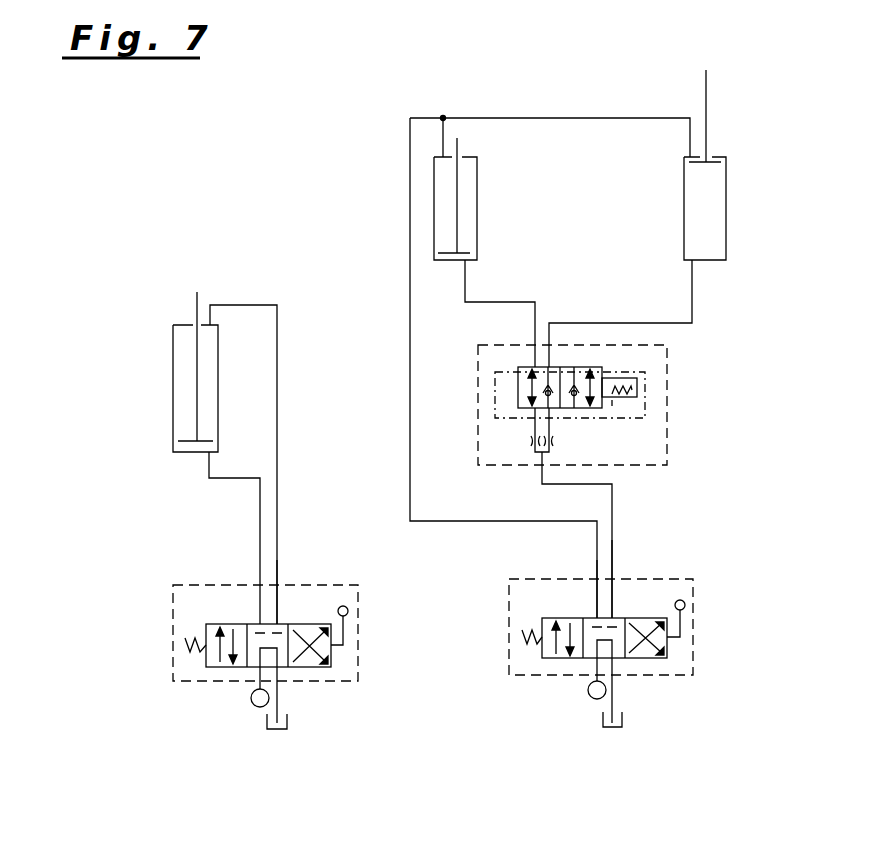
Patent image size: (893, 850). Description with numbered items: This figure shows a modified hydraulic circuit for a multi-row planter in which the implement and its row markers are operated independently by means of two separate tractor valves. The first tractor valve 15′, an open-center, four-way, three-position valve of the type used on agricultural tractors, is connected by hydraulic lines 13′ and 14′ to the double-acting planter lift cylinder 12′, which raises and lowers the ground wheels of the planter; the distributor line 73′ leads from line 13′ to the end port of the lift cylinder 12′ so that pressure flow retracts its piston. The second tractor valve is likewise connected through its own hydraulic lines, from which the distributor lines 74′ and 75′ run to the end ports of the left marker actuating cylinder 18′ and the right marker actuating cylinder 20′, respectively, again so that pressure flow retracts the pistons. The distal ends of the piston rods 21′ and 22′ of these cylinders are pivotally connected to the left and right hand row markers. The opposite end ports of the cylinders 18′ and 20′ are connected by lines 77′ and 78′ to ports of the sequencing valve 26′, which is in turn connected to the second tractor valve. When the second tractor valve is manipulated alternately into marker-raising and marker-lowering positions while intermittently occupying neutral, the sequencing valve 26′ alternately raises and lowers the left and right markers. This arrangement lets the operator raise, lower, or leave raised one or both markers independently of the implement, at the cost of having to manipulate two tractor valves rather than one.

The double-acting hydraulic cylinder 12′ is at (173, 372).
The hydraulic line 13′ is at (260, 553).
The hydraulic line 14′ is at (277, 562).
The tractor valve 15′ is at (185, 585).
The distributor line 73′ is at (213, 305).
The distributor line 74′ is at (410, 298).
The distributor line 75′ is at (590, 118).
The line 77′ is at (497, 302).
The line 78′ is at (608, 323).
The double-acting hydraulic cylinder 18′ is at (477, 225).
The piston rod 21′ is at (457, 148).
The piston rod 22′ is at (706, 95).
The double-acting hydraulic cylinder 20′ is at (726, 230).
The sequencing valve 26′ is at (668, 378).